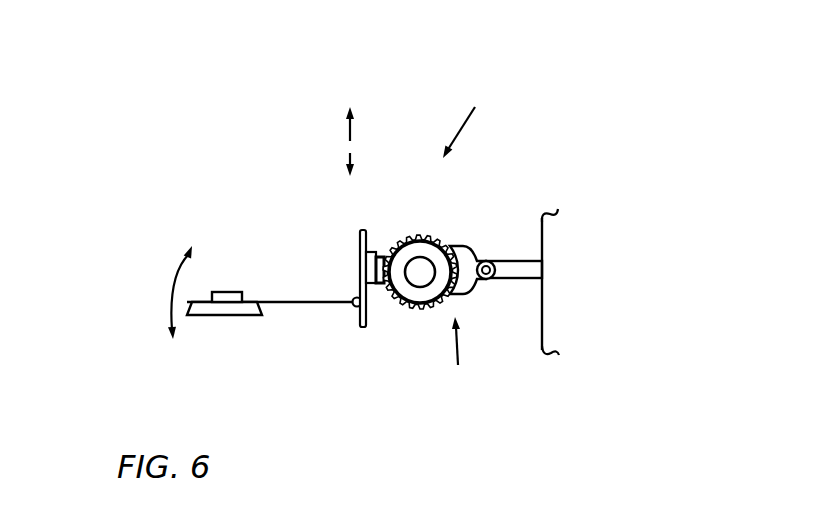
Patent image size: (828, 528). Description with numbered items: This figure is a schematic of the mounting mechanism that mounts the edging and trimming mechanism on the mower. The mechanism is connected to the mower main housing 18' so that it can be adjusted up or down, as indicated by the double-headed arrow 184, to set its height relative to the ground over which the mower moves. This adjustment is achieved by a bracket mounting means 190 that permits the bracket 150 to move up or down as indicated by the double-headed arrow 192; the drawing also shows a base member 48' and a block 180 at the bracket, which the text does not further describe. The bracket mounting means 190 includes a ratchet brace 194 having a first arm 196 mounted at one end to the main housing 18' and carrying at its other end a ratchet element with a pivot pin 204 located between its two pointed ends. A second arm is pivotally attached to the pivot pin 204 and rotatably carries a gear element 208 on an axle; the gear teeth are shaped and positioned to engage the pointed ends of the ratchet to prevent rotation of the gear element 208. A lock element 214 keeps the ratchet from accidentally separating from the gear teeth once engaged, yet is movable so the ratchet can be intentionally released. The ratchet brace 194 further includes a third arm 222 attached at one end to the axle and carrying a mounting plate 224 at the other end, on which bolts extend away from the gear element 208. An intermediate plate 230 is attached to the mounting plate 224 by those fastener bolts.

The bracket 150 is at (287, 312).
The base member 48' is at (224, 341).
The block 180 is at (231, 292).
The double-headed arrow 192 is at (170, 290).
The double-headed arrow 184 is at (351, 143).
The bracket mounting means 190 is at (482, 115).
The intermediate plate 230 is at (363, 232).
The mounting plate 224 is at (373, 250).
The third arm 222 is at (379, 286).
The first arm 196 is at (523, 268).
The lock element 214 is at (484, 280).
The gear element 208 is at (421, 238).
The pivot pin 204 is at (486, 261).
The main housing 18' is at (533, 313).
The ratchet brace 194 is at (464, 358).